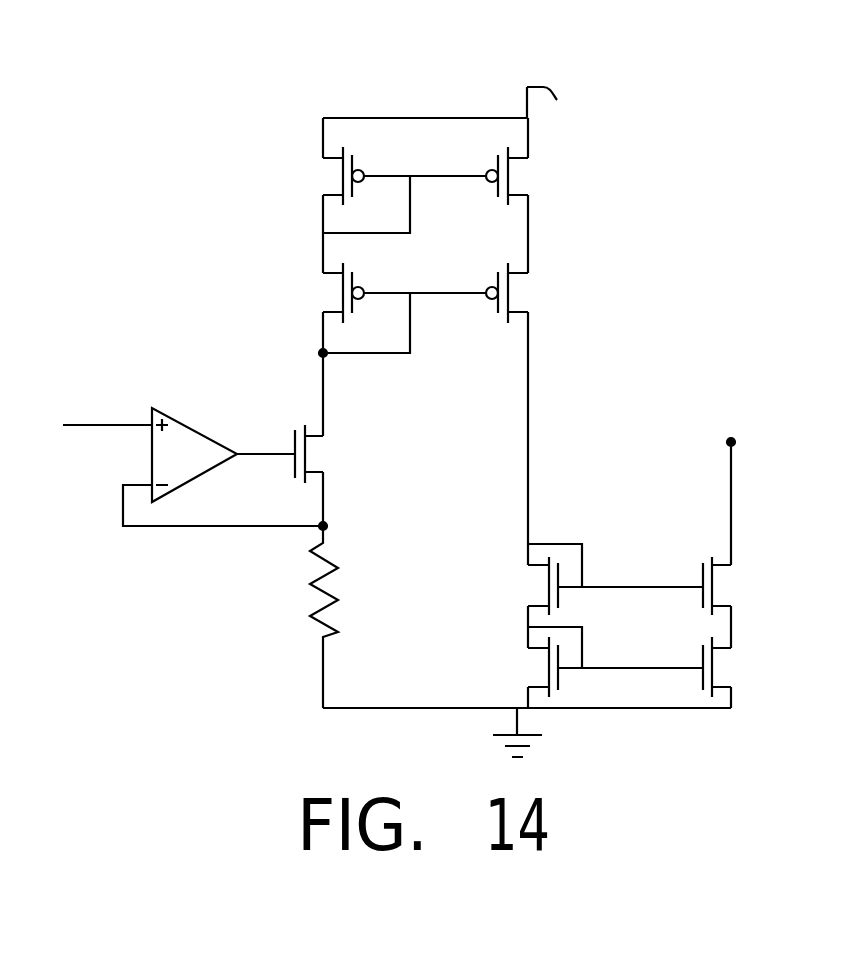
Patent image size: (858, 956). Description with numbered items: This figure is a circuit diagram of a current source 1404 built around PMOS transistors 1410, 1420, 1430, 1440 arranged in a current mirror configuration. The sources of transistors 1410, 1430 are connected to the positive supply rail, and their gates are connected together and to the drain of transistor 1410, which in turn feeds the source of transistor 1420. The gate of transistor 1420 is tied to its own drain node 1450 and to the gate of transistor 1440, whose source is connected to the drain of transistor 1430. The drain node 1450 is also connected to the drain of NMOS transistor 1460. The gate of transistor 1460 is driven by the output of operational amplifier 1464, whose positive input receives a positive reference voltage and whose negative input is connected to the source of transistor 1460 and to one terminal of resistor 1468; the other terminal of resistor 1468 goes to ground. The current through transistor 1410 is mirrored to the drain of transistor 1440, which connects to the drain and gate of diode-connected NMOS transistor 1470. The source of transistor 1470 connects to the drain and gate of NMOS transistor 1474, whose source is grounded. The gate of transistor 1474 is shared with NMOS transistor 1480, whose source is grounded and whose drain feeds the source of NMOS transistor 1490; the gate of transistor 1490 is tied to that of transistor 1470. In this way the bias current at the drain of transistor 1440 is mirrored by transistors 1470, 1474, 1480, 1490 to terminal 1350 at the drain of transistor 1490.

The current source 1404 is at (778, 195).
The PMOS transistor 1410 is at (325, 173).
The PMOS transistor 1420 is at (325, 292).
The PMOS transistor 1430 is at (523, 174).
The PMOS transistor 1440 is at (523, 291).
The drain node 1450 is at (323, 353).
The NMOS transistor 1460 is at (313, 452).
The operational amplifier 1464 is at (181, 430).
The resistor 1468 is at (332, 583).
The NMOS transistor 1470 is at (535, 587).
The NMOS transistor 1474 is at (535, 660).
The NMOS transistor 1480 is at (720, 663).
The NMOS transistor 1490 is at (720, 589).
The terminal 1350 is at (731, 442).